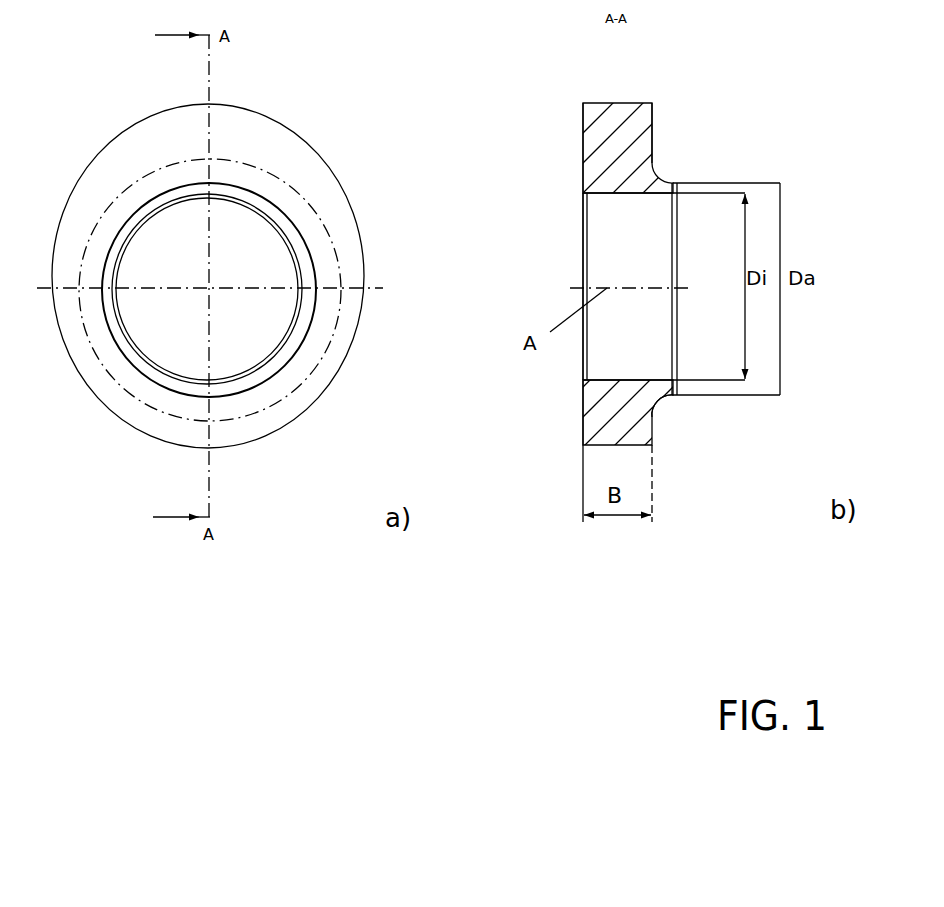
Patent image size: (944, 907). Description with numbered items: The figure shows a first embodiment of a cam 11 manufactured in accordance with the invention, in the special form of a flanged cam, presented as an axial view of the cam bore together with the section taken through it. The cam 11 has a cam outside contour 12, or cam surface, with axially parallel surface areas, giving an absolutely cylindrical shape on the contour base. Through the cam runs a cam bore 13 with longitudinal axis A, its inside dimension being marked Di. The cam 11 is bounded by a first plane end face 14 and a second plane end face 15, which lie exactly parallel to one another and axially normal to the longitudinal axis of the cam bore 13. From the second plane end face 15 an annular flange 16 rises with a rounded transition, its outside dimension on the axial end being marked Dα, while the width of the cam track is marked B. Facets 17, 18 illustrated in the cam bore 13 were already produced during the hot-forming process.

The cam 11 is at (312, 116).
The cam outside contour 12 is at (623, 102).
The cam bore 13 is at (620, 195).
The first plane end face 14 is at (582, 145).
The second plane end face 15 is at (652, 144).
The annular flange 16 is at (673, 408).
The facet 17 is at (584, 346).
The facet 18 is at (674, 322).